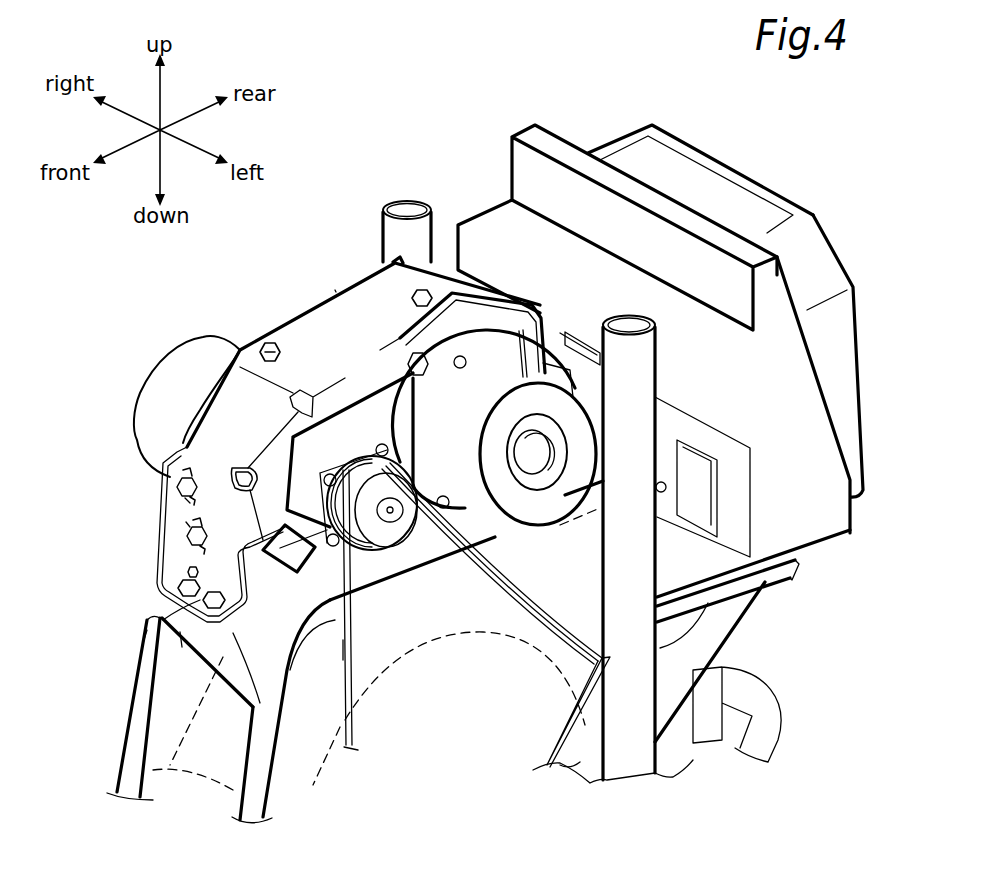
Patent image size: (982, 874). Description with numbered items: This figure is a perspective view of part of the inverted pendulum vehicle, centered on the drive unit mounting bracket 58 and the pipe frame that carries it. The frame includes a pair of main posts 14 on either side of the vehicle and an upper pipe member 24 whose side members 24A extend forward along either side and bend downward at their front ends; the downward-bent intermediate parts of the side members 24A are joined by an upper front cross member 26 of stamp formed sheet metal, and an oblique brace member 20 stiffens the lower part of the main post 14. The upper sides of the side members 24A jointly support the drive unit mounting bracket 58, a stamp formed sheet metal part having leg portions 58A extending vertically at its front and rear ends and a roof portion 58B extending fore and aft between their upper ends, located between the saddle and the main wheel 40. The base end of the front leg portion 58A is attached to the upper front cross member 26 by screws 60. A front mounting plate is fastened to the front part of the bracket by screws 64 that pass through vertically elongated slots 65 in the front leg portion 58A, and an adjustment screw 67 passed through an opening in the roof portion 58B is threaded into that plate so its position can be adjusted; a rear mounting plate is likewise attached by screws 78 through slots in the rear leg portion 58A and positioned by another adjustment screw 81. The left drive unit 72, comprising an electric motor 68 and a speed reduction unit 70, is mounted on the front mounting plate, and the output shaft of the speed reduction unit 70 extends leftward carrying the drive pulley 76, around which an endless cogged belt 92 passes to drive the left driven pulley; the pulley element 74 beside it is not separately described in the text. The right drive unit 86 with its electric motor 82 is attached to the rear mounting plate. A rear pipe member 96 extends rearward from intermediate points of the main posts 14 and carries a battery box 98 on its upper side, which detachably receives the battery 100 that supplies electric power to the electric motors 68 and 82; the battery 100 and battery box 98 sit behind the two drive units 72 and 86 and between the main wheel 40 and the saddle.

The main posts 14 is at (402, 212).
The frame member 20 is at (583, 763).
The upper pipe member 24 is at (273, 737).
The side members 24A is at (140, 680).
The upper front cross member 26 is at (181, 634).
The main wheel 40 is at (313, 793).
The drive unit mounting bracket 58 is at (363, 263).
The leg portions 58A is at (500, 287).
The roof portion 58B is at (335, 290).
The screws 60 is at (203, 593).
The screws 64 is at (178, 482).
The vertically elongated slots 65 is at (190, 527).
The adjustment screw 67 is at (269, 343).
The electric motor 68 is at (175, 355).
The speed reduction unit 70 is at (323, 612).
The left drive unit 72 is at (327, 445).
The pulley 74 is at (390, 523).
The drive pulley 76 is at (418, 560).
The screws 78 is at (655, 255).
The adjustment screw 81 is at (411, 298).
The electric motor 82 is at (528, 325).
The right drive unit 86 is at (458, 337).
The endless cogged belt 92 is at (345, 670).
The rear pipe member 96 is at (775, 568).
The battery box 98 is at (818, 533).
The battery 100 is at (847, 307).